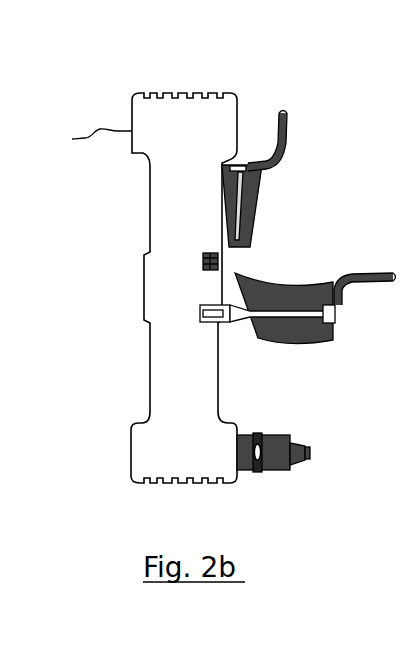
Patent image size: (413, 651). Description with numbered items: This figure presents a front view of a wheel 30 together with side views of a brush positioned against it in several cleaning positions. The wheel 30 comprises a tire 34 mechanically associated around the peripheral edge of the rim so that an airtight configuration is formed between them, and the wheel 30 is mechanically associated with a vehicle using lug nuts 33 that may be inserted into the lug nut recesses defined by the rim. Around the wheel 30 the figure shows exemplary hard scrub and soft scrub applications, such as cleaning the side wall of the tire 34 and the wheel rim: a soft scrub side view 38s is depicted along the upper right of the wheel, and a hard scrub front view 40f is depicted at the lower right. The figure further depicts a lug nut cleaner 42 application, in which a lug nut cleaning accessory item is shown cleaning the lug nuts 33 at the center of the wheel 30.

The wheel 30 is at (124, 99).
The tire 34 is at (85, 135).
The lug nuts 33 is at (203, 258).
The soft scrub side view 38s is at (284, 113).
The lug nut cleaner 42 is at (350, 270).
The hard scrub front view 40f is at (276, 462).